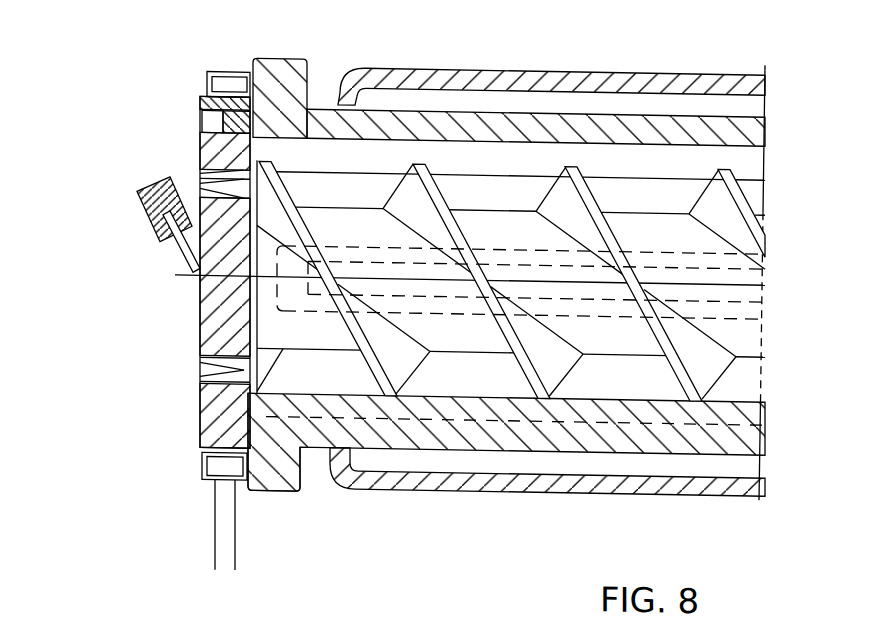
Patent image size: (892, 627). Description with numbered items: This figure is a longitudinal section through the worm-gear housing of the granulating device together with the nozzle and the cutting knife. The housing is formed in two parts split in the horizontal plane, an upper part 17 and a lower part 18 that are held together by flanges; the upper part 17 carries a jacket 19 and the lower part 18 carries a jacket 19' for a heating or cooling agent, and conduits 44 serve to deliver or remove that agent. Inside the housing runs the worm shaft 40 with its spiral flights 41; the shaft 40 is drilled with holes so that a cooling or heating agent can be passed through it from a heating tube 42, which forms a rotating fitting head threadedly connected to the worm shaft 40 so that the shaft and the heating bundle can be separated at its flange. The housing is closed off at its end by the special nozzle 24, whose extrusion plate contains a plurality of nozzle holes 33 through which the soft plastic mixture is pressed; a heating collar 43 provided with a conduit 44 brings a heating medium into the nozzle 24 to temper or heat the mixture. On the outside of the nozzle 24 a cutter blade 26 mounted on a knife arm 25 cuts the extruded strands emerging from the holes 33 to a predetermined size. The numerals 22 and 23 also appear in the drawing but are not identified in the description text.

The upper part of the worm-gear housing 17 is at (288, 73).
The lower part of the worm-gear housing 18 is at (285, 441).
The jacket 19 is at (551, 67).
The jacket 19' is at (547, 508).
The channel in housing wall 22 is at (320, 412).
The barrel wall 23 is at (748, 158).
The special nozzle 24 is at (212, 155).
The knife arm 25 is at (137, 197).
The cutter blade 26 is at (197, 274).
The nozzle holes 33 is at (208, 381).
The worm shaft 40 is at (740, 338).
The spiral flights 41 is at (750, 215).
The heating tube 42 is at (748, 290).
The heating collar 43 is at (220, 84).
The conduits 44 is at (222, 568).